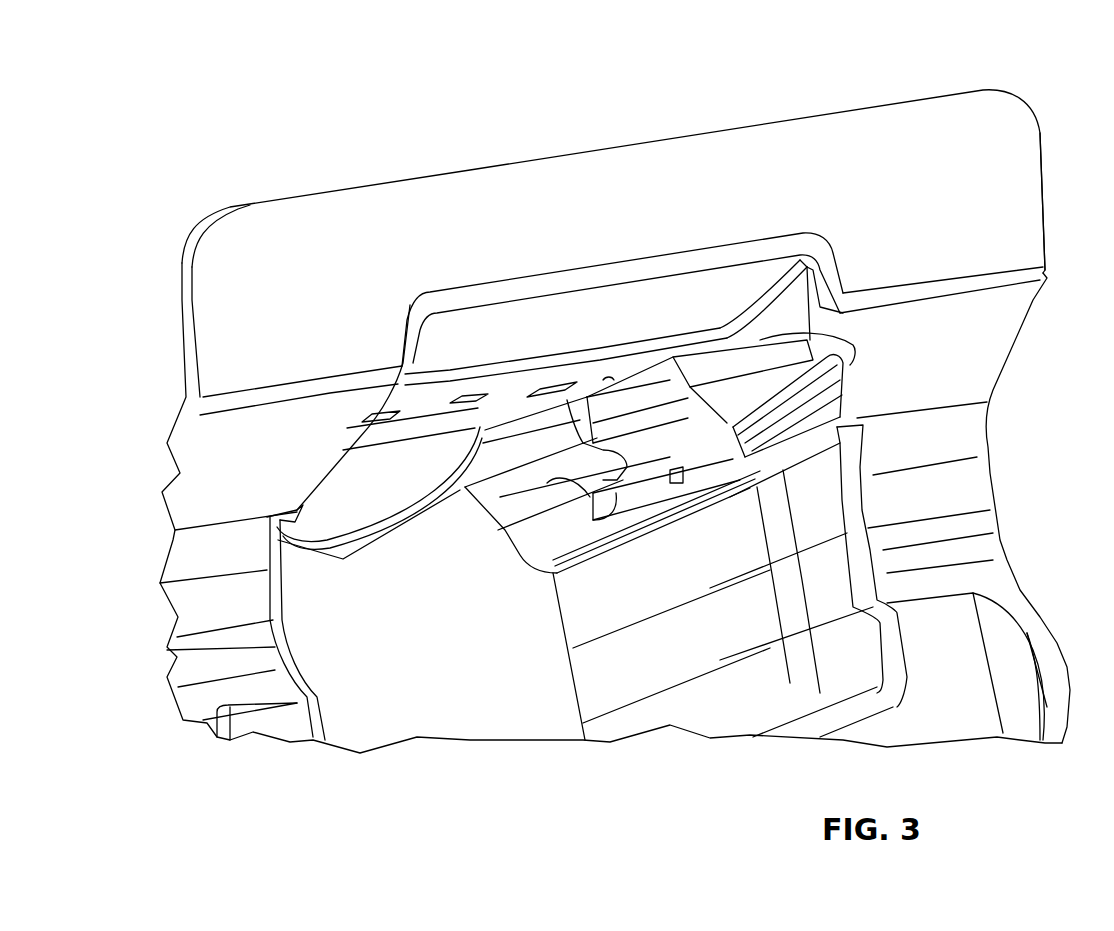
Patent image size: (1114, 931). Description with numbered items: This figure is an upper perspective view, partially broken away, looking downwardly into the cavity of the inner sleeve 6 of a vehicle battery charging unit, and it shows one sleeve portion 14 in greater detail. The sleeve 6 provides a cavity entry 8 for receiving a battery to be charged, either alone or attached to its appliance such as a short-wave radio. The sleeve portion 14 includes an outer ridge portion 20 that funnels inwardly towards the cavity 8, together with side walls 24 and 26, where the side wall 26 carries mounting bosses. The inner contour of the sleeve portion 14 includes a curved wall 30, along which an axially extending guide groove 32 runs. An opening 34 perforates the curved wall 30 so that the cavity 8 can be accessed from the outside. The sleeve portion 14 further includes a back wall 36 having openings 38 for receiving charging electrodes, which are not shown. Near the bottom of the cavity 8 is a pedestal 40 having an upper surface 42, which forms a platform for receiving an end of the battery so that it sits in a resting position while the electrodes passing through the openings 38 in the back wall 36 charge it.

The inner sleeve 6 is at (250, 101).
The cavity 8 is at (593, 290).
The sleeve portion 14 is at (553, 157).
The outer ridge portion 20 is at (1020, 181).
The side wall 24 is at (302, 690).
The side wall 26 is at (740, 717).
The curved wall 30 is at (495, 500).
The guide groove 32 is at (848, 375).
The opening 34 is at (580, 486).
The back wall 36 is at (577, 363).
The openings 38 is at (477, 402).
The pedestal 40 is at (340, 555).
The upper surface 42 is at (397, 495).